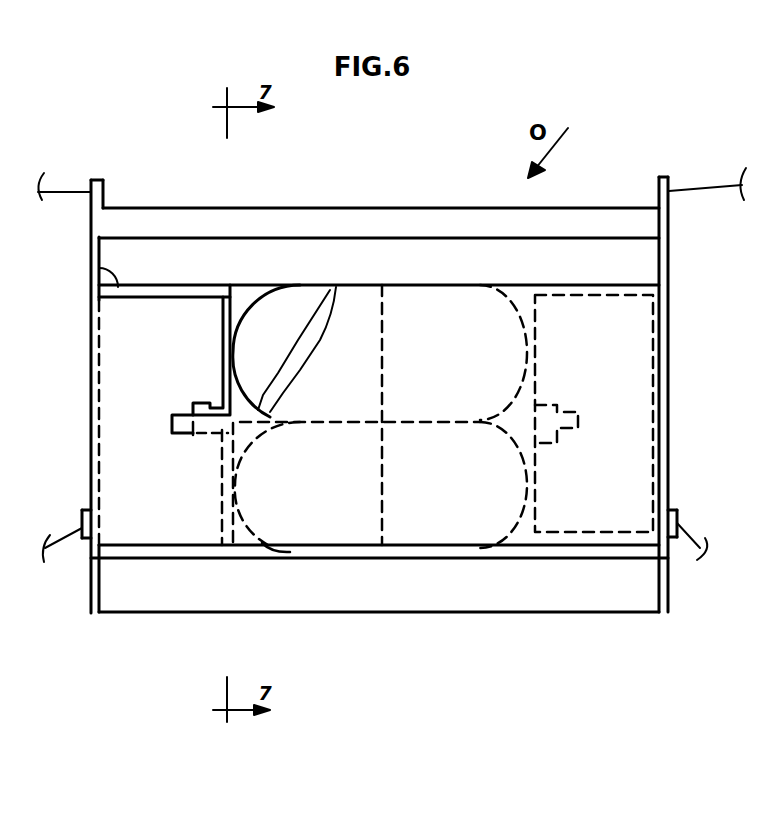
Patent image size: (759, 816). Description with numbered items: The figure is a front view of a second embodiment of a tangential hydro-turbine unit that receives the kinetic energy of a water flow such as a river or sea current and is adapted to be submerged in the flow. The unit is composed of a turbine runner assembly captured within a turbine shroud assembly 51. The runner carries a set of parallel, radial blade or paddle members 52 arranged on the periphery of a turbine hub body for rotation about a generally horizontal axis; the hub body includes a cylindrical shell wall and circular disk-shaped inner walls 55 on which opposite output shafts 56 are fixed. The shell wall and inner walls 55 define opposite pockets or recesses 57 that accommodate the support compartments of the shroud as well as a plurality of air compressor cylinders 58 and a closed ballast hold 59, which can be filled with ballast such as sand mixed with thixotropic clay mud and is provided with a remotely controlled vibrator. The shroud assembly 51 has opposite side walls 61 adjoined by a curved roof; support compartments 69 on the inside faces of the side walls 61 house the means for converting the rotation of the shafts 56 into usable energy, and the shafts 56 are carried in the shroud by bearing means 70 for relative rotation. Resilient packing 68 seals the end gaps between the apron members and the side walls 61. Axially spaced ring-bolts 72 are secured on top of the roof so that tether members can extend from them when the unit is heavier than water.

The turbine shroud assembly 51 is at (658, 287).
The blade or paddle members 52 is at (637, 261).
The circular disk-shaped inner walls 55 is at (237, 306).
The output shafts 56 is at (176, 416).
The pockets or recesses 57 is at (88, 270).
The air compressor cylinders 58 is at (277, 322).
The closed ballast hold 59 is at (336, 287).
The side walls 61 is at (90, 404).
The resilient packing 68 is at (668, 550).
The support compartments 69 is at (137, 303).
The bearing means 70 is at (205, 400).
The ring-bolts 72 is at (64, 191).